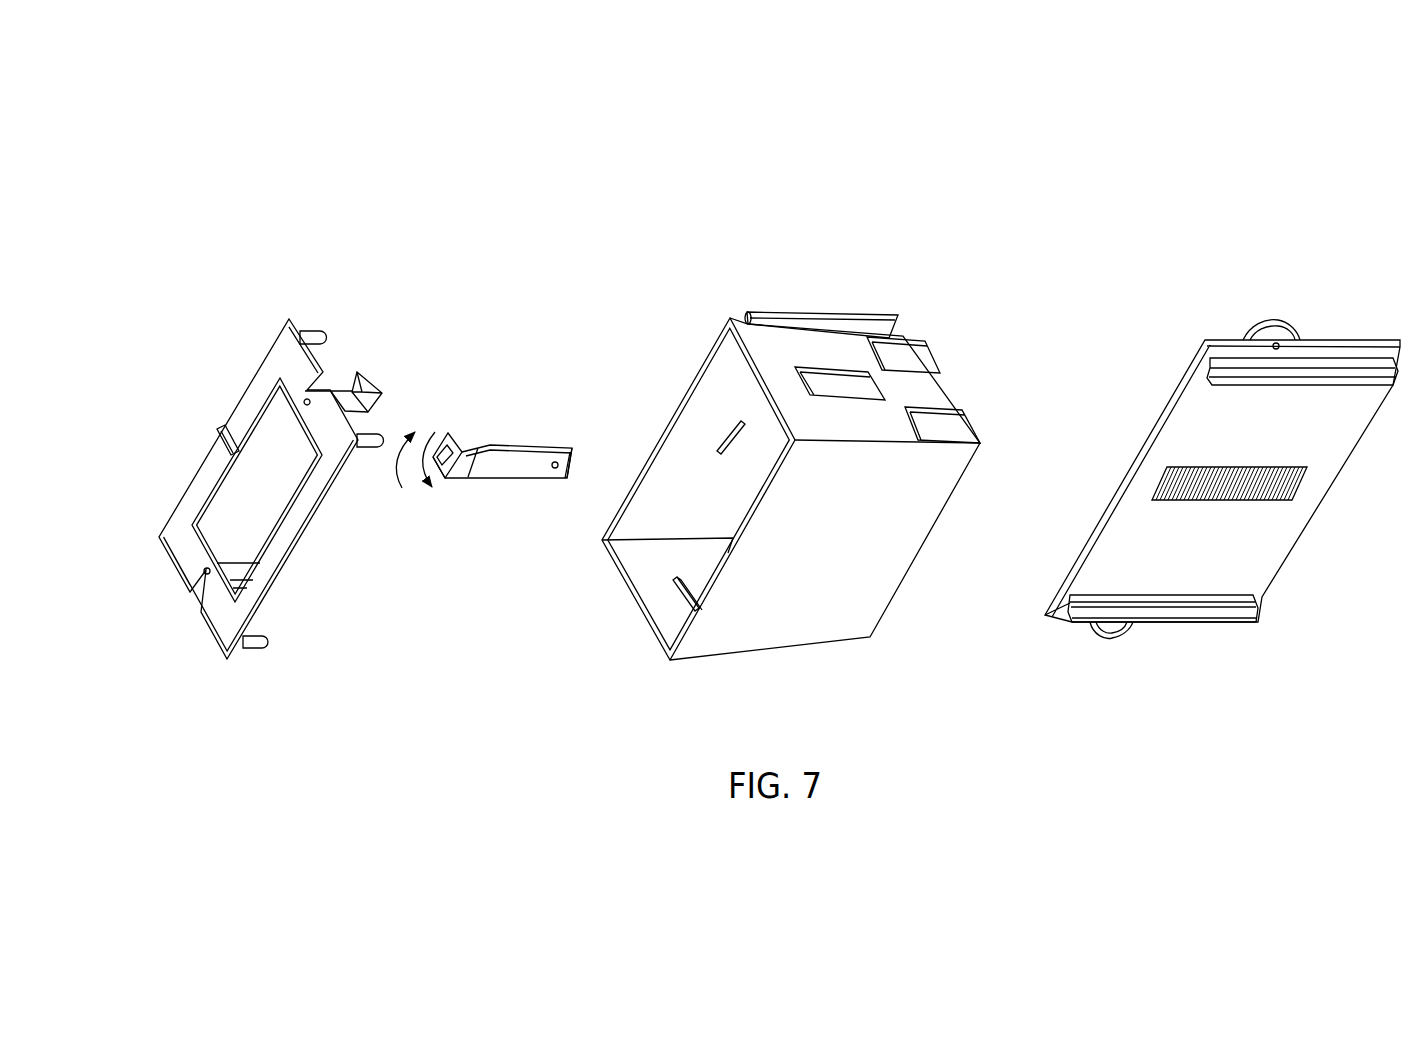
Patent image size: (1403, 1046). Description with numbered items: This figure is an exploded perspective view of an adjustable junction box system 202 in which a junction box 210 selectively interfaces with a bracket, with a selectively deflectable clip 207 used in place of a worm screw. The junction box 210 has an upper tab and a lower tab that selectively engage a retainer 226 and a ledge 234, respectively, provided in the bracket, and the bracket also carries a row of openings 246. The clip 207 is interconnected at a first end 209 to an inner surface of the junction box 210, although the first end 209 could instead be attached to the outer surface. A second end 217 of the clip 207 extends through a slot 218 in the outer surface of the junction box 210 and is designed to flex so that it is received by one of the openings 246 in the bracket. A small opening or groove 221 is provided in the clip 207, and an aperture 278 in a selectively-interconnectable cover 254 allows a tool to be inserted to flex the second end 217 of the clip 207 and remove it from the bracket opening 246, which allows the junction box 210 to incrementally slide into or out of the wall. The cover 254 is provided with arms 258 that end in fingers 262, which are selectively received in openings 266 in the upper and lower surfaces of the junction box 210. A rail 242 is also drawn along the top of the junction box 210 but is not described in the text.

The adjustable junction box system 202 is at (675, 210).
The selectively-interconnectable cover 254 is at (225, 630).
The aperture 278 is at (222, 437).
The arms 258 is at (343, 392).
The fingers 262 is at (371, 378).
The selectively deflectable clip 207 is at (521, 468).
The second end 217 is at (448, 433).
The first end 209 is at (572, 448).
The small opening or groove 221 is at (443, 477).
The junction box 210 is at (825, 663).
The top rail 242 is at (878, 327).
The slot 218 is at (724, 438).
The openings 266 is at (682, 590).
The retainer 226 is at (1308, 358).
The openings 246 is at (1268, 493).
The ledge 234 is at (1197, 615).